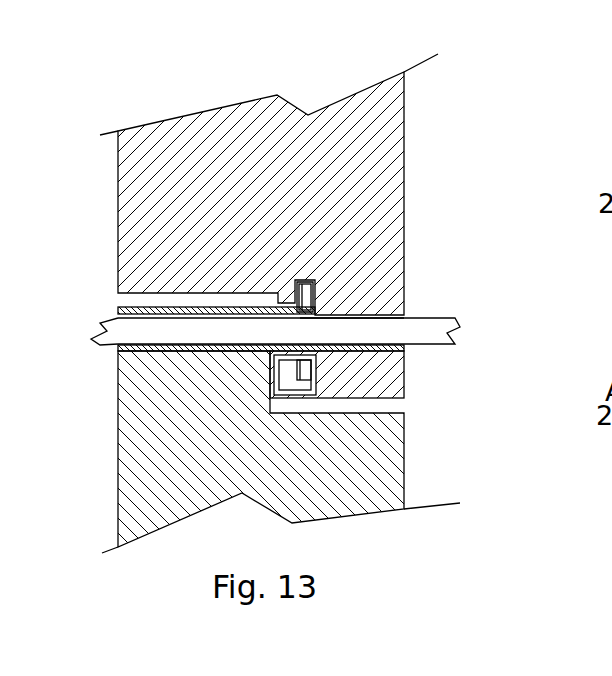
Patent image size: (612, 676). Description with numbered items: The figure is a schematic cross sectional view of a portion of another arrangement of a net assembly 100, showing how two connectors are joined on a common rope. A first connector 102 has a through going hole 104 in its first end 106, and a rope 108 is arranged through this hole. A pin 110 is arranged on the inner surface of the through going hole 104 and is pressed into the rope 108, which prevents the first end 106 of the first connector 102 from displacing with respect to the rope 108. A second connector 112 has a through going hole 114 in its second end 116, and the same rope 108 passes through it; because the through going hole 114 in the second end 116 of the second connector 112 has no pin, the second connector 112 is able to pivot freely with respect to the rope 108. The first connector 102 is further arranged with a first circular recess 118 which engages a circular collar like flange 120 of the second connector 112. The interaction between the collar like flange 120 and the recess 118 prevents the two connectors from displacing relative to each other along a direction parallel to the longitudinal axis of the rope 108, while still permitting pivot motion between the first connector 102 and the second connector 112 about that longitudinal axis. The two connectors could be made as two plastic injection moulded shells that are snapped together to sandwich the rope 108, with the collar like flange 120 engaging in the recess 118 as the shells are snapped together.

The net assembly 100 is at (477, 117).
The first connector 102 is at (393, 174).
The through going hole 104 is at (406, 313).
The first end 106 is at (133, 238).
The rope 108 is at (437, 325).
The pin 110 is at (347, 320).
The second connector 112 is at (133, 485).
The through going hole 114 is at (118, 346).
The second end 116 is at (130, 383).
The first circular recess 118 is at (318, 281).
The circular collar like flange 120 is at (303, 372).